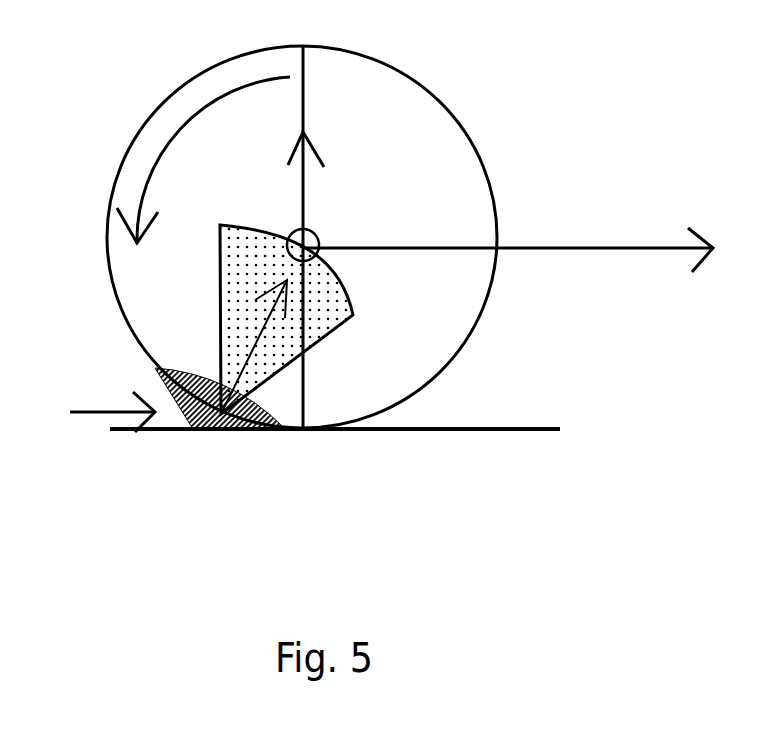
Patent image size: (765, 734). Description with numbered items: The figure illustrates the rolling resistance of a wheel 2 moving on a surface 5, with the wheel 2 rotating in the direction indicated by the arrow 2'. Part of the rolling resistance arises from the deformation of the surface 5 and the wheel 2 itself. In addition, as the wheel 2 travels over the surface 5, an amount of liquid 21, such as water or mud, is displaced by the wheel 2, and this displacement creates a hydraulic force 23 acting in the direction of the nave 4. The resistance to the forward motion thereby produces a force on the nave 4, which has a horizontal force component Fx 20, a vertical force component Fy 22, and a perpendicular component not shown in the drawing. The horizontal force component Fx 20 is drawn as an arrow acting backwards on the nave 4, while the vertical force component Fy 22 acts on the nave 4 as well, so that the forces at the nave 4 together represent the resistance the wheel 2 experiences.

The wheel 2 is at (262, 237).
The arrow 2' is at (197, 155).
The nave 4 is at (306, 234).
The surface 5 is at (438, 430).
The horizontal force component Fx 20 is at (583, 250).
The liquid 21 is at (200, 431).
The vertical force component Fy 22 is at (305, 136).
The hydraulic force 23 is at (250, 363).